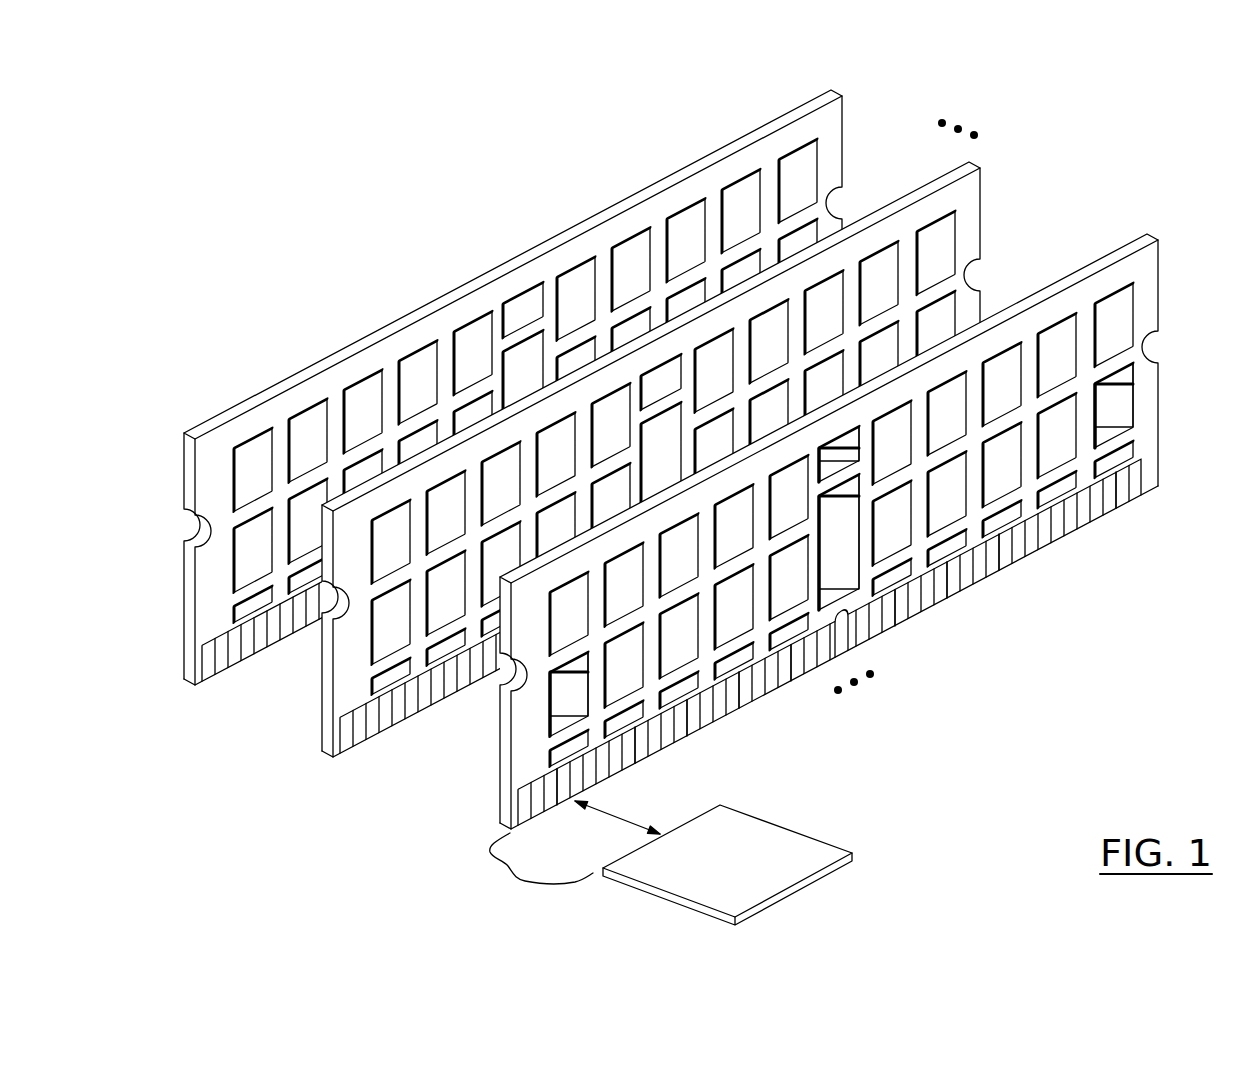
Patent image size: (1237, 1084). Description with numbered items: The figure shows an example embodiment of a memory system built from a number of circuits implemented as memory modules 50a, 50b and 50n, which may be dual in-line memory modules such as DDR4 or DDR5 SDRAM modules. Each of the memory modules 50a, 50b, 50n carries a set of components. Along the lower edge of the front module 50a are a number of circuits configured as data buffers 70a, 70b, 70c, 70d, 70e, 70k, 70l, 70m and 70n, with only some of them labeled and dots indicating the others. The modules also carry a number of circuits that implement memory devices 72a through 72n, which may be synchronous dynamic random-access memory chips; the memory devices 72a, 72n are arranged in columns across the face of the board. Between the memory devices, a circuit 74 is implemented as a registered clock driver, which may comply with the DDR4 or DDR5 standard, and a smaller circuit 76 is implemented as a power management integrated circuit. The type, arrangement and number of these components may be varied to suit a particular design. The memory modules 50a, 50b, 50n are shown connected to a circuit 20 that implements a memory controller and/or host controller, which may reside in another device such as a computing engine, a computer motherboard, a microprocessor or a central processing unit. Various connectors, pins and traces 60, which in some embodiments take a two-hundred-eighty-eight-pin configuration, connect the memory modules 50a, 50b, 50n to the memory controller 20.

The memory controller 20 is at (783, 826).
The memory module 50a is at (828, 531).
The memory module 50b is at (980, 192).
The memory module 50n is at (843, 133).
The connectors/pins/traces 60 is at (541, 870).
The data buffer 70a is at (550, 762).
The data buffer 70b is at (632, 728).
The data buffer 70c is at (687, 701).
The data buffer 70d is at (740, 673).
The data buffer 70e is at (791, 646).
The data buffer 70k is at (896, 590).
The data buffer 70l is at (947, 564).
The data buffer 70m is at (999, 535).
The data buffer 70n is at (1116, 473).
The memory device 72a is at (552, 660).
The memory device 72n is at (1133, 408).
The registered clock driver 74 is at (851, 551).
The power management integrated circuit 76 is at (835, 430).